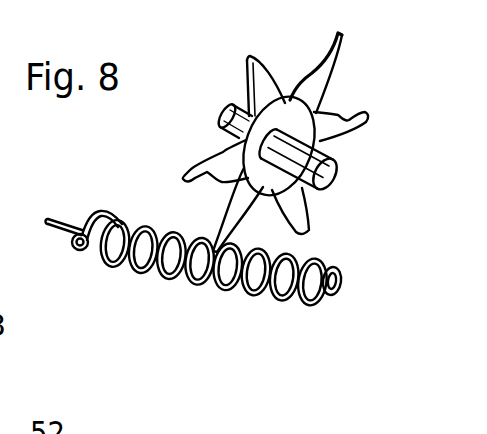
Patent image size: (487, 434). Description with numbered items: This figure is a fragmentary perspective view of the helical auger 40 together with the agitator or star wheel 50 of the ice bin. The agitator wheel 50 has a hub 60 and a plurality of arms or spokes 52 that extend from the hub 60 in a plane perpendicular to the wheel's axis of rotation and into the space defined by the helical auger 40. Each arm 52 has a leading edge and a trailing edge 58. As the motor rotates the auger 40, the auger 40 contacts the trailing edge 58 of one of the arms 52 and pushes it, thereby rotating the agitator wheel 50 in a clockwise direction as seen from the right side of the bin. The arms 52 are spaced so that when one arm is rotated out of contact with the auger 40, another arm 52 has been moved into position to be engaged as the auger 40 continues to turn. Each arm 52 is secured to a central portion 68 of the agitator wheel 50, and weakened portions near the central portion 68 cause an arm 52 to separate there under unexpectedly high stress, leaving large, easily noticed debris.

The helical auger 40 is at (170, 277).
The agitator wheel 50 is at (284, 138).
The arms 52 is at (227, 113).
The trailing edge 58 is at (227, 243).
The hub 60 is at (313, 132).
The central portion 68 is at (288, 117).